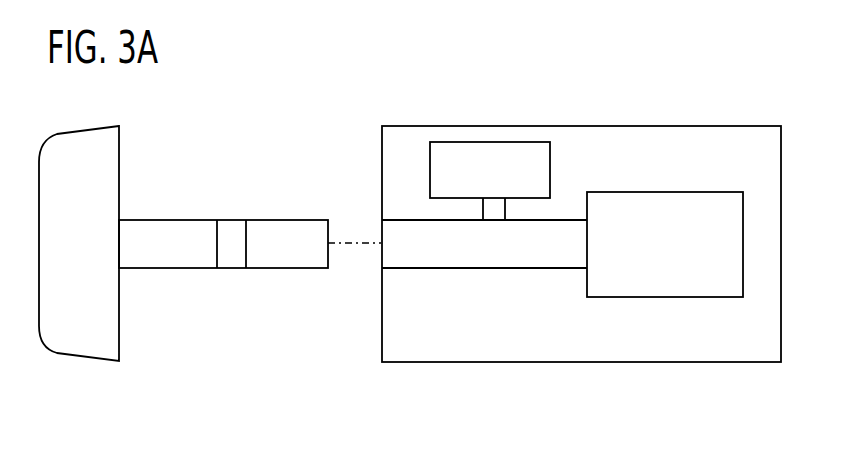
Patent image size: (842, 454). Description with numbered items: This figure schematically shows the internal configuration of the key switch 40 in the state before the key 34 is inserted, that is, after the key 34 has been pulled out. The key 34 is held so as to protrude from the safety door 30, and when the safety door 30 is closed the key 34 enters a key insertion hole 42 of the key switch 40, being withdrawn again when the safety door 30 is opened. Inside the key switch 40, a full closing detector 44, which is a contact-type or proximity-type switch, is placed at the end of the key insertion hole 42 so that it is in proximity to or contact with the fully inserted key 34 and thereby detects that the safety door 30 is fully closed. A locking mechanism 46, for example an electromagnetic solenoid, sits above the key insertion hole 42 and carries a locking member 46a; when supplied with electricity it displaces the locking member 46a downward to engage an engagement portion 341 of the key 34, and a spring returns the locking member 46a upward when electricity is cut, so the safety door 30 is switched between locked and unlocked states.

The safety door 30 is at (93, 247).
The key 34 is at (151, 220).
The engagement portion 341 is at (245, 248).
The key switch 40 is at (580, 126).
The key insertion hole 42 is at (400, 267).
The full closing detector 44 is at (663, 191).
The locking mechanism 46 is at (429, 182).
The locking member 46a is at (497, 213).